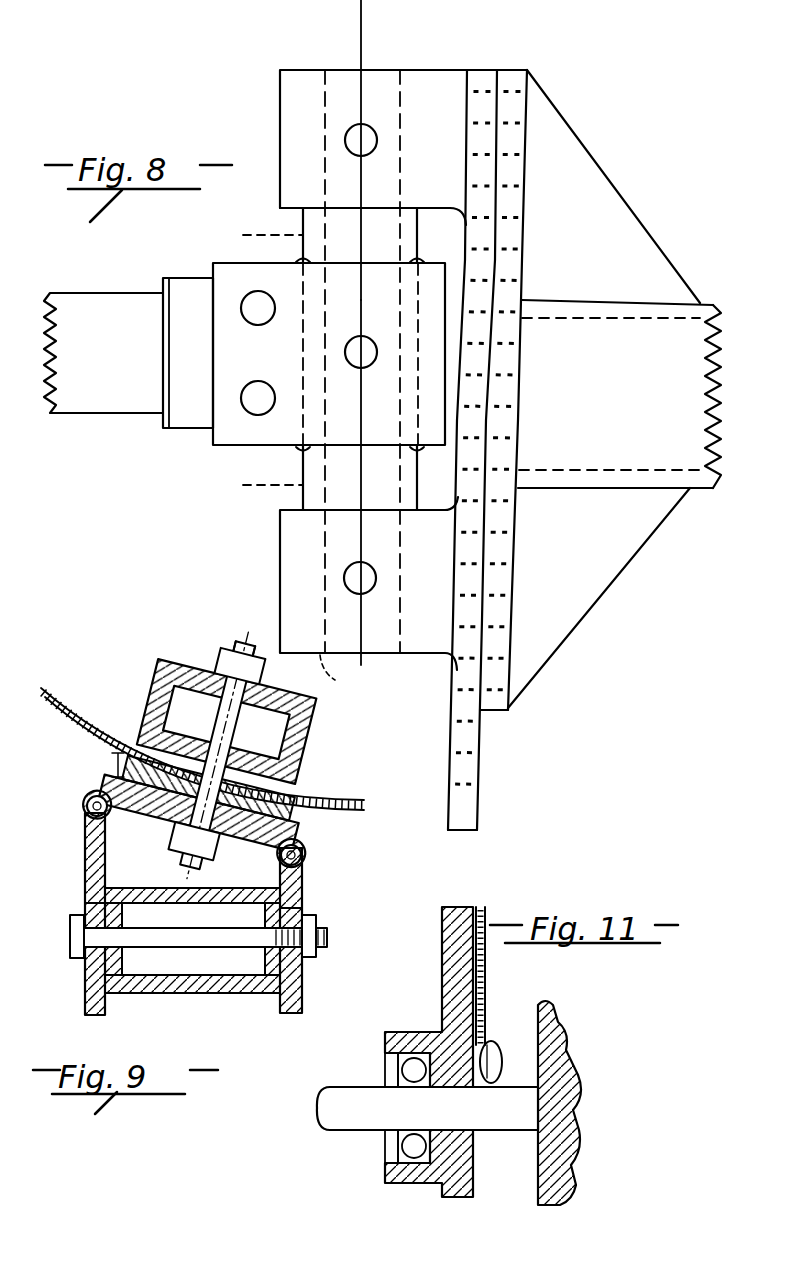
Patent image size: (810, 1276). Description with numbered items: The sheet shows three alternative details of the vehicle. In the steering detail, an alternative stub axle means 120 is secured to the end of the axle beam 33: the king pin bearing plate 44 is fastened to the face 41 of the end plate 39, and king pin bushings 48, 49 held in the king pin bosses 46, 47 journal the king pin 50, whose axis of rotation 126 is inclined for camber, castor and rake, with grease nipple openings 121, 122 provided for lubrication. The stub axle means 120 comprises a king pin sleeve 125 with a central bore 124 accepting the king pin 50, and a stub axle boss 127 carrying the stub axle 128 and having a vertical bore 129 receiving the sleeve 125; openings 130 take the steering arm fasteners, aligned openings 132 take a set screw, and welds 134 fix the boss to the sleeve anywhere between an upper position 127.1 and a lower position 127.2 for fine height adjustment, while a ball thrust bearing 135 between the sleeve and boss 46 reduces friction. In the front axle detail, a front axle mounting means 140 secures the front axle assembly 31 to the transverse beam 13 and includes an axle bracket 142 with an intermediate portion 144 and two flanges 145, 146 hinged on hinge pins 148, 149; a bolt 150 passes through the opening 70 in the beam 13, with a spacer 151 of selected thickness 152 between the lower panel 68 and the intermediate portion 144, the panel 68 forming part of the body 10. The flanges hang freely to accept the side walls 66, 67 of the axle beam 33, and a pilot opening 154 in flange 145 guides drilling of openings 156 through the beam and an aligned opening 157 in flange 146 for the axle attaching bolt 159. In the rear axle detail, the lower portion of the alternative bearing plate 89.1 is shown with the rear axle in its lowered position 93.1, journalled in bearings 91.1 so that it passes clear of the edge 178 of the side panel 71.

In FIG. 8, the king pin bushing 48 is at (325, 68).
In FIG. 8, the king pin 50 is at (376, 85).
In FIG. 8, the king pin boss 46 is at (436, 82).
In FIG. 8, the face of the end plate 41 is at (490, 78).
In FIG. 8, the king pin bearing plate 44 is at (447, 705).
In FIG. 8, the end plate 39 is at (510, 268).
In FIG. 8, the axle beam 33 is at (687, 333).
In FIG. 9, the axle beam 33 is at (196, 992).
In FIG. 8, the grease nipple opening 121 is at (370, 145).
In FIG. 8, the grease nipple opening 122 is at (343, 562).
In FIG. 8, the aligned openings 132 is at (368, 338).
In FIG. 8, the openings 130 is at (266, 292).
In FIG. 8, the ball thrust bearing 135 is at (412, 210).
In FIG. 8, the king pin sleeve 125 is at (298, 471).
In FIG. 8, the welds 134 is at (300, 262).
In FIG. 8, the stub axle boss 127 is at (220, 456).
In FIG. 8, the upper position 127.1 is at (272, 234).
In FIG. 8, the lower position 127.2 is at (262, 488).
In FIG. 8, the central bore 124 is at (335, 277).
In FIG. 8, the vertical bore 129 is at (305, 340).
In FIG. 8, the stub axle means 120 is at (212, 235).
In FIG. 8, the stub axle 128 is at (128, 402).
In FIG. 8, the axis of rotation 126 is at (362, 665).
In FIG. 8, the king pin boss 47 is at (263, 608).
In FIG. 8, the king pin bushing 49 is at (339, 675).
In FIG. 9, the band 10 is at (70, 714).
In FIG. 9, the lower panel 68 is at (203, 749).
In FIG. 9, the transverse beam 13 is at (312, 762).
In FIG. 9, the intermediate portion 144 is at (133, 808).
In FIG. 9, the spacer 151 is at (292, 802).
In FIG. 9, the thickness 152 is at (112, 762).
In FIG. 9, the front axle mounting means 140 is at (96, 790).
In FIG. 9, the opening 70 is at (243, 705).
In FIG. 9, the bolt 150 is at (232, 646).
In FIG. 9, the hinge pin 148 is at (86, 812).
In FIG. 9, the hinge pin 149 is at (303, 857).
In FIG. 9, the axle bracket 142 is at (84, 848).
In FIG. 9, the flange 145 is at (86, 880).
In FIG. 9, the flange 146 is at (303, 890).
In FIG. 9, the side wall 67 is at (303, 912).
In FIG. 9, the side wall 66 is at (106, 900).
In FIG. 9, the front axle assembly 31 is at (141, 1000).
In FIG. 9, the openings 156 is at (136, 924).
In FIG. 9, the axle attaching bolt 159 is at (326, 937).
In FIG. 9, the opening 154 is at (78, 956).
In FIG. 9, the opening 157 is at (308, 962).
In FIG. 11, the side panel 71 is at (486, 958).
In FIG. 11, the edge 178 is at (496, 1068).
In FIG. 11, the alternative lowered position 93.1 is at (348, 1117).
In FIG. 11, the rear axle bearing plate 89.1 is at (453, 1190).
In FIG. 11, the bearings 91.1 is at (385, 1172).